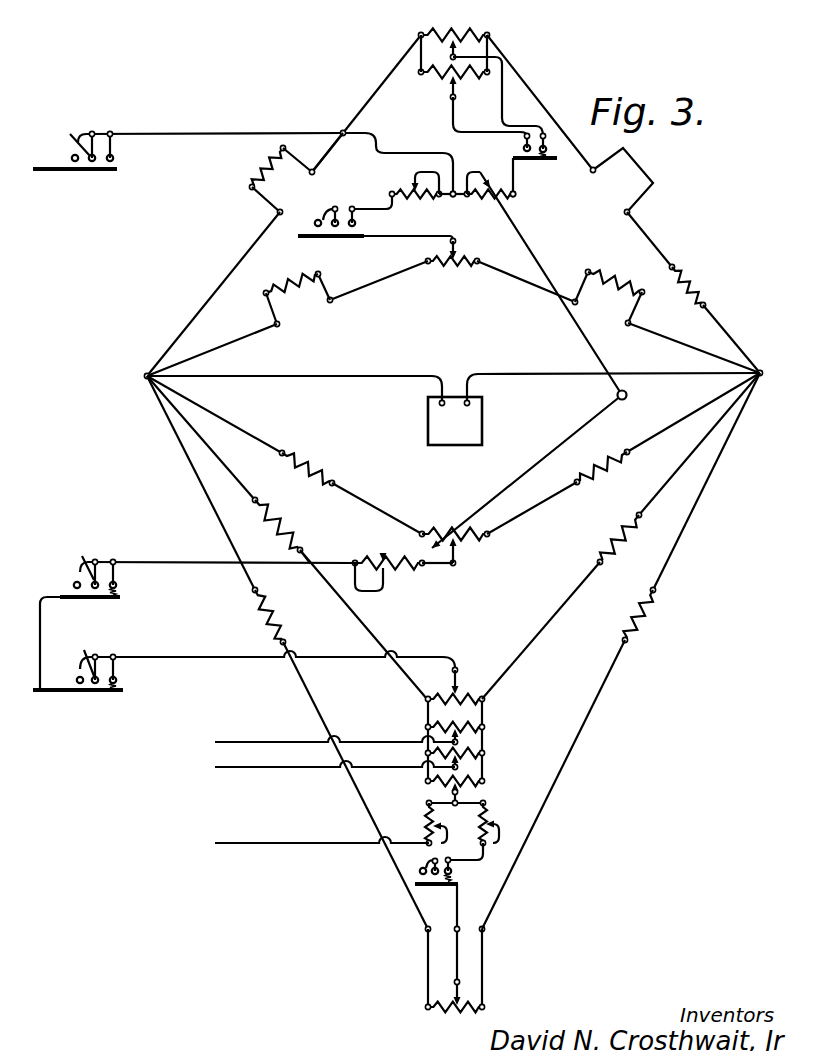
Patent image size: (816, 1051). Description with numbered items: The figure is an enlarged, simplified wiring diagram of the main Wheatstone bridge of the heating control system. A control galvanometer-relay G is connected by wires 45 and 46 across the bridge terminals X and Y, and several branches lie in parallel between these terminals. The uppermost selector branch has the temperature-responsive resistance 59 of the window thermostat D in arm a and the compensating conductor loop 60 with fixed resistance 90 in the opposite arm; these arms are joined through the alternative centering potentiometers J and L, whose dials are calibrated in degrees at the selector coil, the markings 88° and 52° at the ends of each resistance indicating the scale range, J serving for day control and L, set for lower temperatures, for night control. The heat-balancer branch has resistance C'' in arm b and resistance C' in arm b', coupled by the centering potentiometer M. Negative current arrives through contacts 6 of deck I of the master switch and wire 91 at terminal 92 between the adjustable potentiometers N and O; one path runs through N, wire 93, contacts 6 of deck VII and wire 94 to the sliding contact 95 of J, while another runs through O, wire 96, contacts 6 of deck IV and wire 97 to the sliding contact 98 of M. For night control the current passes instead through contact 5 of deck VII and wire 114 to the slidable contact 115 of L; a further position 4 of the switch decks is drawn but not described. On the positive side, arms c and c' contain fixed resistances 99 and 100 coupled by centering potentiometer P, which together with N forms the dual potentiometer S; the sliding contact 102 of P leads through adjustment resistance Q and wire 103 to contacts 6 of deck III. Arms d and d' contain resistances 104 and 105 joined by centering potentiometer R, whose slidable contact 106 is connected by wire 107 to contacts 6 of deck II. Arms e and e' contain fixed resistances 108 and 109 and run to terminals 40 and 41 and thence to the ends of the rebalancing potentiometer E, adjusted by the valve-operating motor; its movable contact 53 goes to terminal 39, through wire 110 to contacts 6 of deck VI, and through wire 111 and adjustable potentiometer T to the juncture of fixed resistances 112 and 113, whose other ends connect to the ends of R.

The switch contact 4 is at (72, 158).
The night-control switch contact 5 is at (432, 896).
The day-control switch contact 6 is at (113, 156).
The panel board terminal 39 is at (461, 932).
The panel board terminal 40 is at (426, 930).
The panel board terminal 41 is at (486, 929).
The galvanometer wire 45 is at (440, 372).
The galvanometer wire 46 is at (474, 372).
The common terminal 52 is at (506, 55).
The movable contact member 53 is at (455, 990).
The heat-sensitive resistance 59 is at (268, 160).
The balancing loop 60 is at (655, 186).
The temperature scale mark 88° 88 is at (406, 57).
The fixed resistance 90 is at (690, 292).
The wire 91 is at (223, 133).
The terminal 92 is at (454, 205).
The wire 93 is at (513, 181).
The wire 94 is at (498, 96).
The sliding contact 95 is at (441, 51).
The wire 96 is at (408, 228).
The wire 97 is at (438, 238).
The sliding contact 98 is at (458, 250).
The fixed resistance 99 is at (325, 478).
The fixed resistance 100 is at (598, 455).
The sliding contact 102 is at (458, 559).
The wire 103 is at (217, 556).
The resistance 104 is at (287, 529).
The resistance 105 is at (610, 536).
The slidable contact 106 is at (451, 672).
The wire 107 is at (441, 652).
The fixed resistance 108 is at (255, 622).
The fixed resistance 109 is at (647, 636).
The wire 110 is at (459, 919).
The wire 111 is at (484, 856).
The fixed resistance 112 is at (426, 788).
The fixed resistance 113 is at (486, 792).
The wire 114 is at (450, 131).
The slidable contact 115 is at (448, 89).
The day centering potentiometer J is at (401, 91).
The night centering potentiometer L is at (458, 80).
The window thermostat D is at (246, 174).
The adjustable potentiometer O is at (414, 201).
The adjustable potentiometer N is at (502, 197).
The centering adjustment potentiometer M is at (437, 269).
The heat-sensitive resistance C'' is at (295, 293).
The heat-sensitive resistance C' is at (608, 288).
The control galvanometer-relay G is at (479, 440).
The dual potentiometer S is at (613, 397).
The centering potentiometer P is at (458, 530).
The adjustment resistance Q is at (378, 557).
The centering potentiometer R is at (462, 695).
The adjustable potentiometer T is at (494, 819).
The bridge rebalancing potentiometer E is at (465, 1015).
The bridge terminal X is at (142, 377).
The bridge terminal Y is at (767, 376).
The bridge arm a is at (190, 318).
The bridge arm b is at (212, 349).
The bridge arm c is at (214, 414).
The bridge arm d is at (206, 438).
The bridge arm e is at (201, 483).
The bridge arm b' is at (694, 343).
The bridge arm c' is at (693, 412).
The bridge arm d' is at (699, 444).
The bridge arm e' is at (706, 481).
The master switch deck I is at (79, 172).
The master switch deck II is at (74, 690).
The master switch deck III is at (90, 640).
The master switch deck IV is at (333, 219).
The master switch deck VI is at (446, 884).
The master switch deck VII is at (517, 154).